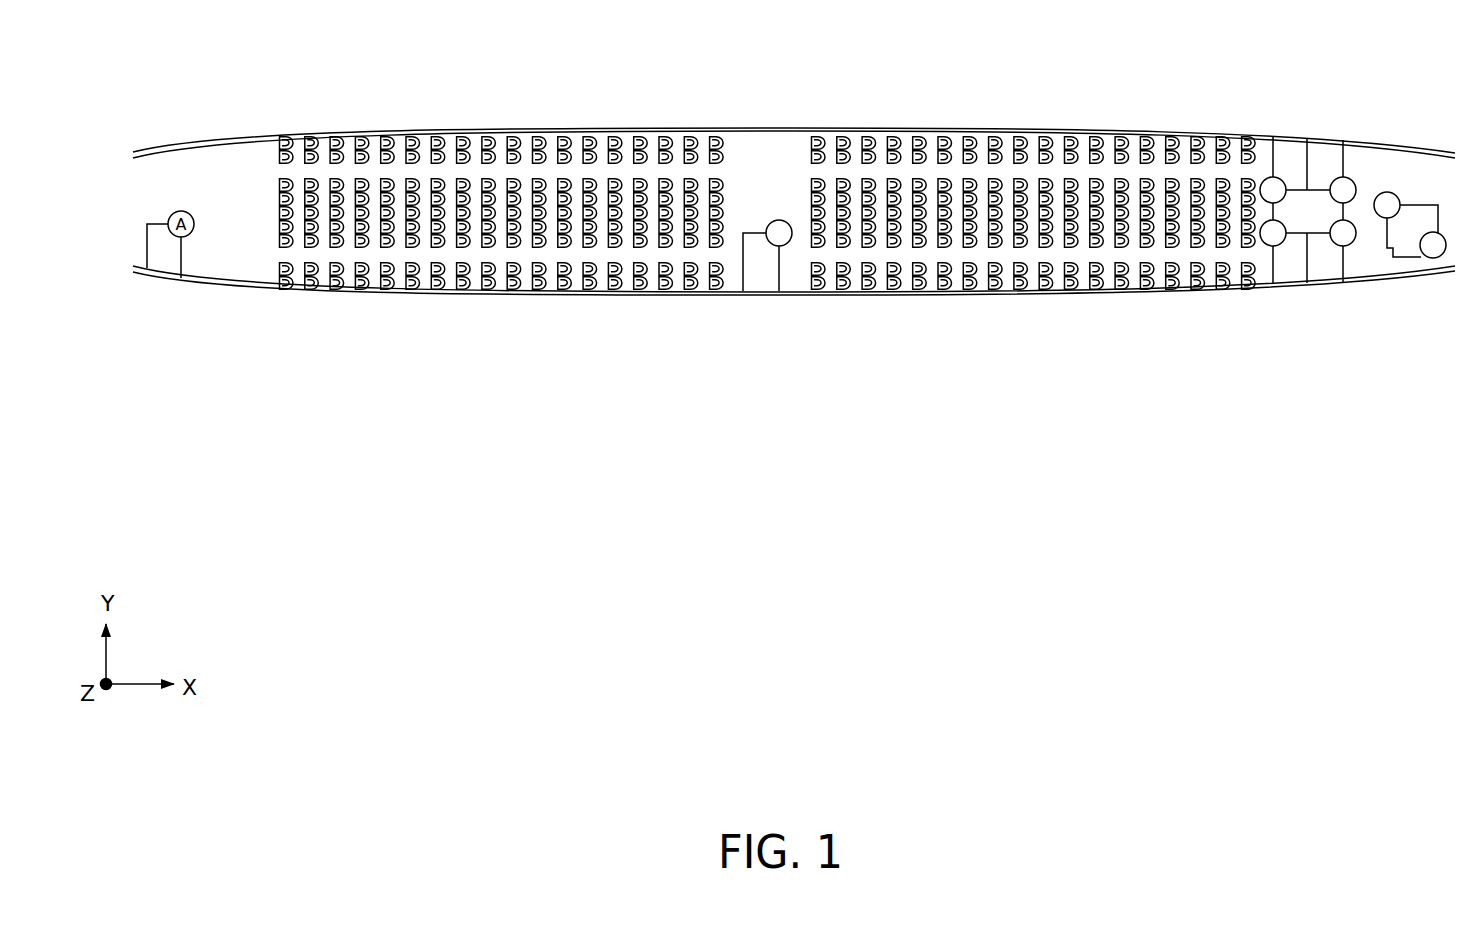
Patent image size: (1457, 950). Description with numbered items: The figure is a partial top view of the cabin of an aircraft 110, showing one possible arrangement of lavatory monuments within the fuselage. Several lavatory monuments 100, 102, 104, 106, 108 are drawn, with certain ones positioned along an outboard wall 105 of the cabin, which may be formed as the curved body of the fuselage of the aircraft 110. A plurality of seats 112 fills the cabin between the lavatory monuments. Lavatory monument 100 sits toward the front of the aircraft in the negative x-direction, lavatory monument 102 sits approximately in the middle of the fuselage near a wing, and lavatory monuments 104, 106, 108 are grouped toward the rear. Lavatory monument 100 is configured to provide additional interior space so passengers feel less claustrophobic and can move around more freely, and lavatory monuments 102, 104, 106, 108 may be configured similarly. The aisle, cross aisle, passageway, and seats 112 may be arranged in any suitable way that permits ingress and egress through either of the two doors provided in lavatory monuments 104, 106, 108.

The lavatory monument 100 is at (165, 291).
The lavatory monument 102 is at (761, 308).
The lavatory monument 104 is at (1302, 308).
The outboard wall 105 is at (788, 132).
The lavatory monument 106 is at (1307, 126).
The lavatory monument 108 is at (1407, 182).
The aircraft 110 is at (1104, 89).
The seats 112 is at (525, 110).